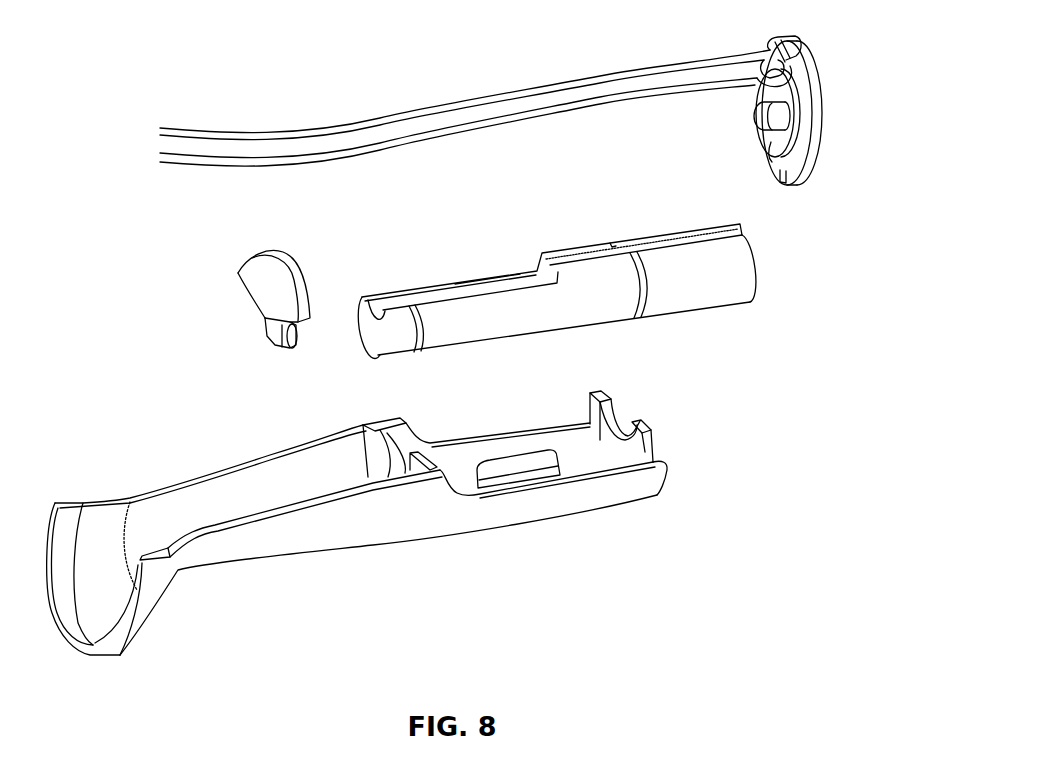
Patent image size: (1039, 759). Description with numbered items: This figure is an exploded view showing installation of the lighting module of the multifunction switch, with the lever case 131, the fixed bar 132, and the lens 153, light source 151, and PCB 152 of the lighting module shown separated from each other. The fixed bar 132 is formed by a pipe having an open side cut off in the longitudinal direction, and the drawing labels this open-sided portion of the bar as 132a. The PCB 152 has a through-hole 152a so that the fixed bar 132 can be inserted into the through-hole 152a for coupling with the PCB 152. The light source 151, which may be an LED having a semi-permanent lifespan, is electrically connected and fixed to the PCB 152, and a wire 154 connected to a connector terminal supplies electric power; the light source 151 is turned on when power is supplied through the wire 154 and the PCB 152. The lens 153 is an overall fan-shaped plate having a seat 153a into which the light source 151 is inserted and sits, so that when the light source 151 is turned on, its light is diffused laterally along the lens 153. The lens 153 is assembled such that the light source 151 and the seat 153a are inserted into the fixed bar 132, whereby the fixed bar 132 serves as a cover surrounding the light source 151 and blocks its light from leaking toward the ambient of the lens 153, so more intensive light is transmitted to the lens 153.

The lever case 131 is at (455, 523).
The fixed bar 132 is at (703, 298).
The half-pipe receiving portion of cylinder 132a is at (468, 278).
The light source 151 is at (760, 117).
The PCB 152 is at (813, 167).
The through-hole 152a is at (773, 142).
The lens 153 is at (293, 273).
The seat 153a is at (298, 342).
The wire 154 is at (543, 110).